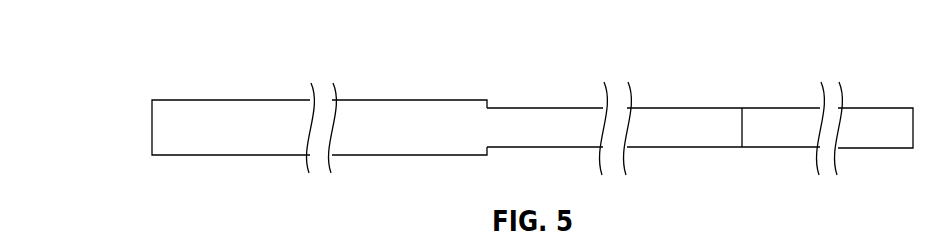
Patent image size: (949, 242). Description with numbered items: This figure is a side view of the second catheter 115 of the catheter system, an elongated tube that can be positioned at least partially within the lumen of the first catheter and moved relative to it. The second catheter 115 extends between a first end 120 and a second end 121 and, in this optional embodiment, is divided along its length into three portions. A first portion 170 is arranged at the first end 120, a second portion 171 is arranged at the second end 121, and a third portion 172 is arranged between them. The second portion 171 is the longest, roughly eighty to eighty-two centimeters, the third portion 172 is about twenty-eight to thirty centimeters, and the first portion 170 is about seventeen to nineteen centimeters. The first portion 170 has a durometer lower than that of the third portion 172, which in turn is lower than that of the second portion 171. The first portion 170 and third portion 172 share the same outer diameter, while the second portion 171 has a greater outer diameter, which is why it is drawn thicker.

The second catheter 115 is at (465, 33).
The first end 120 is at (903, 102).
The second end 121 is at (163, 92).
The first portion 170 is at (792, 107).
The second portion 171 is at (275, 100).
The third portion 172 is at (573, 107).